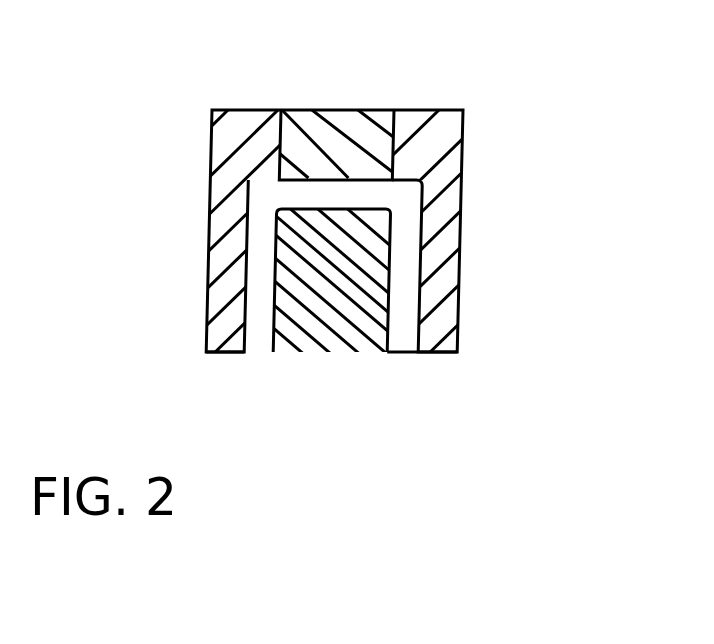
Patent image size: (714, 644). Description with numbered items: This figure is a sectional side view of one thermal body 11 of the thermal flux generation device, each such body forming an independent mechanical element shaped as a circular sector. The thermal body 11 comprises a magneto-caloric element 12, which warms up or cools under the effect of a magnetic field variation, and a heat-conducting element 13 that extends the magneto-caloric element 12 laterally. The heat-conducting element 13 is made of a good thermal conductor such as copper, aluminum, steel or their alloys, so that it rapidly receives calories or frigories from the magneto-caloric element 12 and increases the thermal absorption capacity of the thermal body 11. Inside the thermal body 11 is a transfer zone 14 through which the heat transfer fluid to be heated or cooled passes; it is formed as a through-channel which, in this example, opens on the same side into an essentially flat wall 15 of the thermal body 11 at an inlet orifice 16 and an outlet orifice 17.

The thermal body 11 is at (306, 380).
The magneto-caloric element 12 is at (304, 122).
The heat-conducting element 13 is at (209, 243).
The transfer zone 14 is at (405, 253).
The flat wall 15 is at (428, 353).
The inlet orifice 16 is at (250, 360).
The outlet orifice 17 is at (404, 370).